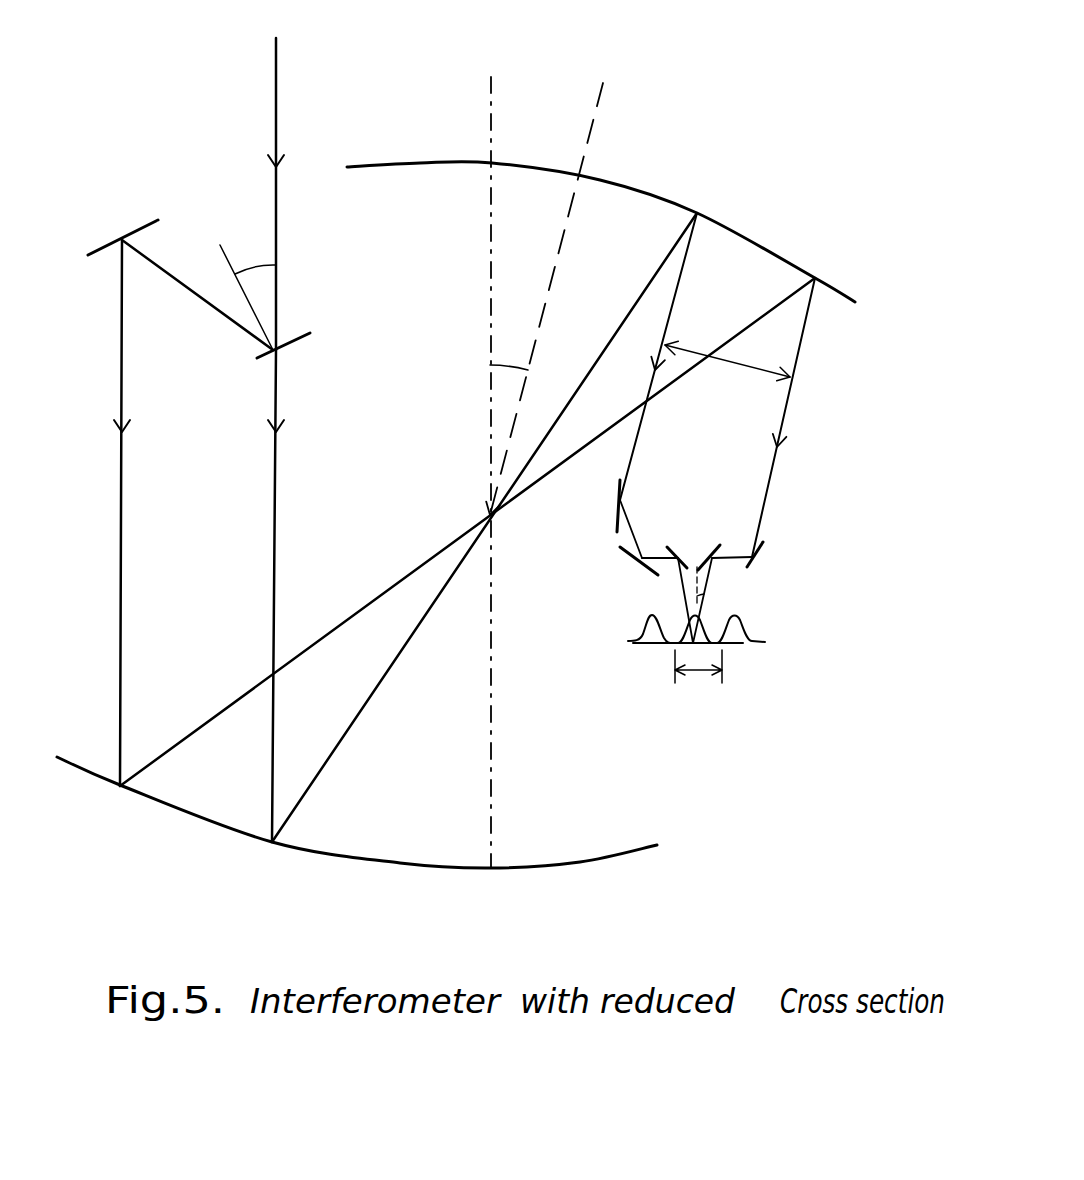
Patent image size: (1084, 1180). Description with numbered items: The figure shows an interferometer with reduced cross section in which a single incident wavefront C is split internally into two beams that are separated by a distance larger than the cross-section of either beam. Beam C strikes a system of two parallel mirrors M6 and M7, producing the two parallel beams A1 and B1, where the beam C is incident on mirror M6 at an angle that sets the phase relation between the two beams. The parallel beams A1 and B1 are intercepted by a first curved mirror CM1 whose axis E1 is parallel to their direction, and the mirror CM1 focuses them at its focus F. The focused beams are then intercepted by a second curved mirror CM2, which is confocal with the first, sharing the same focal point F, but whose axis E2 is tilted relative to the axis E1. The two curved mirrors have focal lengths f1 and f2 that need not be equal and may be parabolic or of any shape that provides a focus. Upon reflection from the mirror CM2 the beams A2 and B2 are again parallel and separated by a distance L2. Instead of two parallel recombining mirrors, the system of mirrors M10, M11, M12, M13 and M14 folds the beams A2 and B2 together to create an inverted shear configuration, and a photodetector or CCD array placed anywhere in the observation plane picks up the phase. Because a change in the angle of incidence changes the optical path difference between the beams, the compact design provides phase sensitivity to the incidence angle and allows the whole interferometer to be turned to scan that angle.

The incident wavefront C is at (284, 185).
The parallel mirror M7 is at (180, 269).
The parallel mirror M6 is at (303, 342).
The first parallel beam B1 is at (136, 513).
The first parallel beam A1 is at (292, 596).
The axis of curved mirror CM1 E1 is at (511, 447).
The axis of curved mirror CM2 E2 is at (564, 278).
The focal length of CM1 f1 is at (467, 697).
The focal length of CM2 f2 is at (565, 311).
The first curved mirror CM1 is at (357, 840).
The second curved mirror CM2 is at (601, 232).
The common focus F is at (467, 527).
The second parallel beam A2 is at (658, 356).
The second parallel beam B2 is at (783, 417).
The beam separation distance L2 is at (727, 361).
The recombining mirror M14 is at (608, 519).
The recombining mirror M13 is at (674, 586).
The recombining mirror M12 is at (717, 582).
The recombining mirror M11 is at (640, 564).
The recombining mirror M10 is at (760, 554).